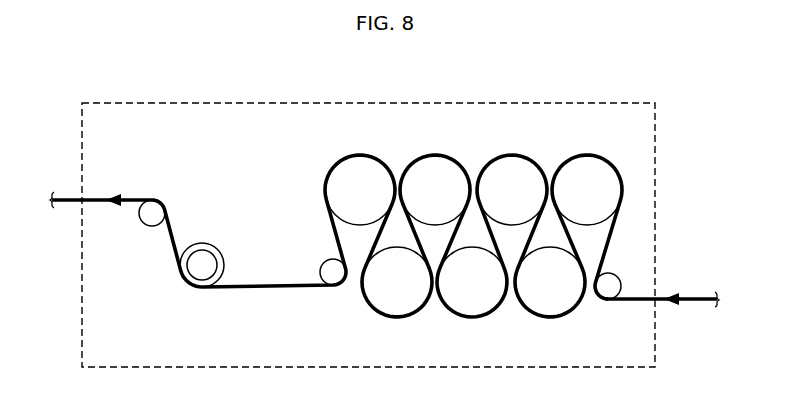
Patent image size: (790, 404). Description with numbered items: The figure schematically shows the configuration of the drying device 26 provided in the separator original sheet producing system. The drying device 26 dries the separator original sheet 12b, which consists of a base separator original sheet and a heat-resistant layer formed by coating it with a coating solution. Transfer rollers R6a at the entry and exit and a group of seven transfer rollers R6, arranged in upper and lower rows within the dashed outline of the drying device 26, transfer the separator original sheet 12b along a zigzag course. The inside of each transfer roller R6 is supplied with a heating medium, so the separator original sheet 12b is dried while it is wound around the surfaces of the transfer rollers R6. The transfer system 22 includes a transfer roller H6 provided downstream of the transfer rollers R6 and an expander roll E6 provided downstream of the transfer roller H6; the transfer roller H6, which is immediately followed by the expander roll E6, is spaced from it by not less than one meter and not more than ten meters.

The drying device 26 is at (613, 103).
The separator original sheet 12b is at (262, 281).
The transfer system 22 is at (617, 266).
The transfer roller R6a is at (152, 222).
The expander roll E6 is at (200, 255).
The transfer roller H6 is at (327, 263).
The transfer rollers R6 is at (358, 164).